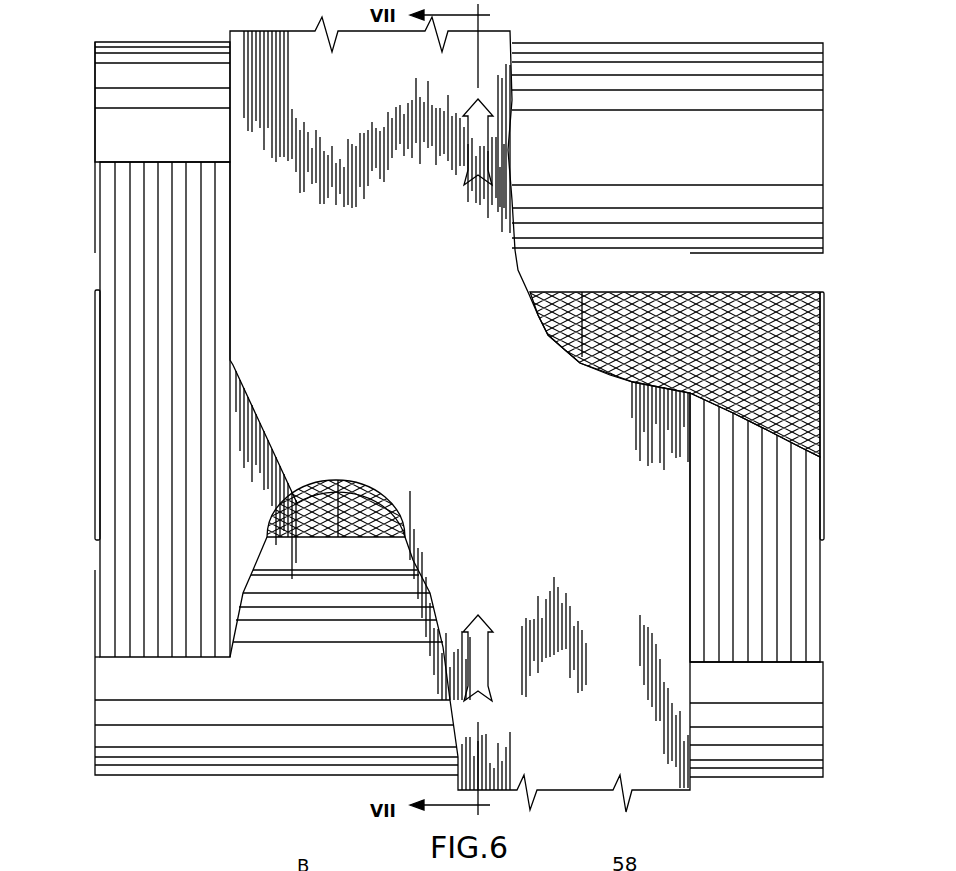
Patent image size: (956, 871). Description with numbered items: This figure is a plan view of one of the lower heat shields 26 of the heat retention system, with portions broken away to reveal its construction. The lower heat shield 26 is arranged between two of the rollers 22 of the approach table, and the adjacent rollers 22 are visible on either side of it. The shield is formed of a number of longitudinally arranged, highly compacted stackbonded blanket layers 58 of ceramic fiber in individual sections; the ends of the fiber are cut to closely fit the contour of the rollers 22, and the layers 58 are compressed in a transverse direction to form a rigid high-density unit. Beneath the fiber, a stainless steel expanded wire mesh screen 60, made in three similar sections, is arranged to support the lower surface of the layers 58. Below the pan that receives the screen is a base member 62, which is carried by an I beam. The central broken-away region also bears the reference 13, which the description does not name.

The body / wear part 13 is at (478, 438).
The roller 22 is at (103, 154).
The lower heat shield 26 is at (86, 451).
The stackbonded blanket layers 58 is at (120, 306).
The expanded wire mesh screen 60 is at (795, 300).
The base member 62 is at (823, 370).